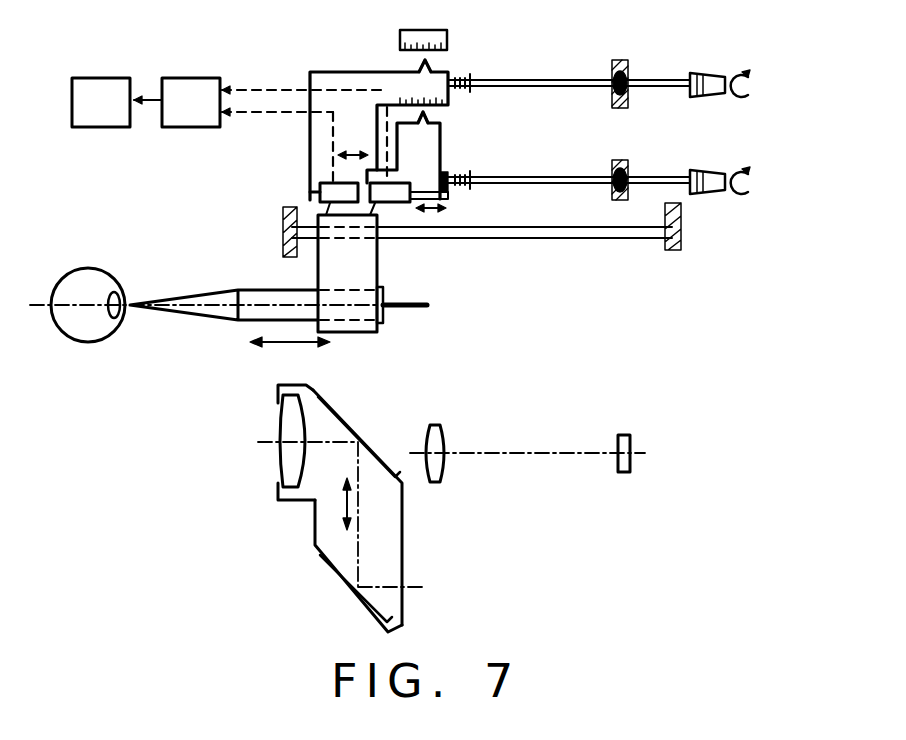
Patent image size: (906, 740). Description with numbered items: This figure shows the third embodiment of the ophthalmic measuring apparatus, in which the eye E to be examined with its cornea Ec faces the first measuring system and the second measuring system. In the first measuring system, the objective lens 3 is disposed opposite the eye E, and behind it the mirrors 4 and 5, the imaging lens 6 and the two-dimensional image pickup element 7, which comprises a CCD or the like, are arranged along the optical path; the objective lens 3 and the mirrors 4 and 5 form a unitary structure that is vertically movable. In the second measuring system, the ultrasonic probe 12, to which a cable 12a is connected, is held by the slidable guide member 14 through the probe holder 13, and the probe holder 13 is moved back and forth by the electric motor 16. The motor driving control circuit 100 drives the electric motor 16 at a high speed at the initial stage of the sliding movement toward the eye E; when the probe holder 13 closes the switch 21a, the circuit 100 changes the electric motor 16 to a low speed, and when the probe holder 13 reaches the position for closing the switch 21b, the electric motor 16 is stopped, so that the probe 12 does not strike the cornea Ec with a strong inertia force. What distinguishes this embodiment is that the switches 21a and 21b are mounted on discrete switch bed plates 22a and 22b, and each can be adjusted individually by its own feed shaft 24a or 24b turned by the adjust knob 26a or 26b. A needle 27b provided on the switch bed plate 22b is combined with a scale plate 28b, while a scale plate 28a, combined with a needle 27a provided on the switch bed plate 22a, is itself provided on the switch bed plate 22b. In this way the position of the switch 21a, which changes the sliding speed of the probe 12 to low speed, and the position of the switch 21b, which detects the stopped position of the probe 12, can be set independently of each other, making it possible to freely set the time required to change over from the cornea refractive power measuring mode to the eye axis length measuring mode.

The objective lens 3 is at (287, 459).
The mirror 4 is at (357, 424).
The mirror 5 is at (324, 568).
The imaging lens 6 is at (437, 484).
The two-dimensional image pickup element 7 is at (624, 474).
The ultrasonic probe 12 is at (273, 297).
The cable 12a is at (428, 307).
The probe holder 13 is at (368, 265).
The slidable guide member 14 is at (606, 239).
The electric motor 16 is at (110, 76).
The switch 21a is at (450, 195).
The switch 21b is at (316, 190).
The switch bed plate 22a is at (430, 145).
The switch bed plate 22b is at (312, 74).
The feed shaft 24a is at (574, 177).
The feed shaft 24b is at (585, 80).
The adjust knob 26a is at (710, 170).
The adjust knob 26b is at (712, 72).
The needle 27a is at (430, 118).
The needle 27b is at (430, 66).
The scale plate 28a is at (400, 98).
The scale plate 28b is at (447, 42).
The motor driving control circuit 100 is at (202, 76).
The eye to be examined E is at (80, 274).
The cornea Ec is at (118, 291).